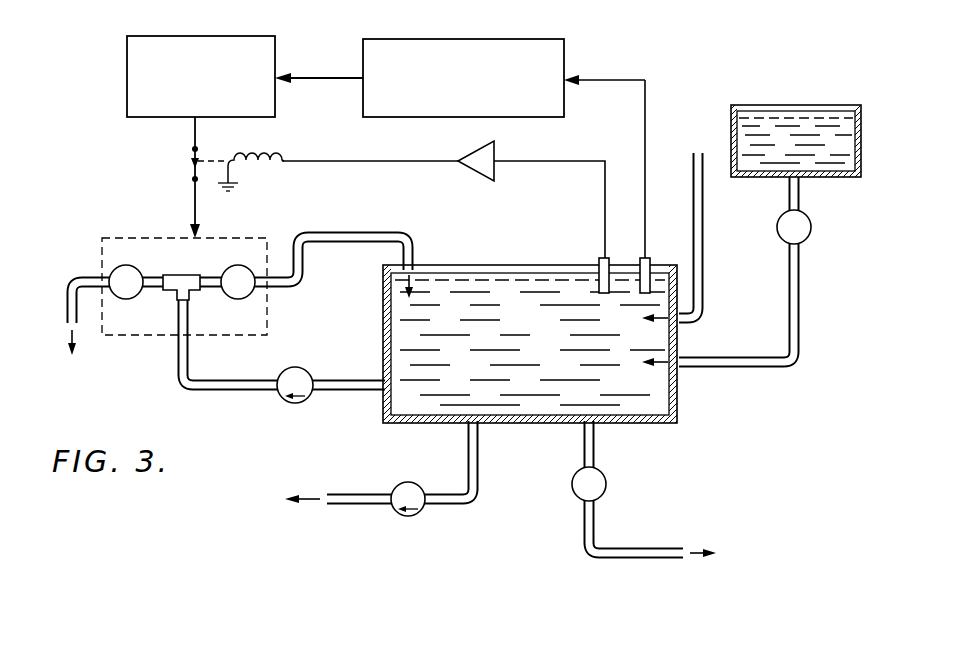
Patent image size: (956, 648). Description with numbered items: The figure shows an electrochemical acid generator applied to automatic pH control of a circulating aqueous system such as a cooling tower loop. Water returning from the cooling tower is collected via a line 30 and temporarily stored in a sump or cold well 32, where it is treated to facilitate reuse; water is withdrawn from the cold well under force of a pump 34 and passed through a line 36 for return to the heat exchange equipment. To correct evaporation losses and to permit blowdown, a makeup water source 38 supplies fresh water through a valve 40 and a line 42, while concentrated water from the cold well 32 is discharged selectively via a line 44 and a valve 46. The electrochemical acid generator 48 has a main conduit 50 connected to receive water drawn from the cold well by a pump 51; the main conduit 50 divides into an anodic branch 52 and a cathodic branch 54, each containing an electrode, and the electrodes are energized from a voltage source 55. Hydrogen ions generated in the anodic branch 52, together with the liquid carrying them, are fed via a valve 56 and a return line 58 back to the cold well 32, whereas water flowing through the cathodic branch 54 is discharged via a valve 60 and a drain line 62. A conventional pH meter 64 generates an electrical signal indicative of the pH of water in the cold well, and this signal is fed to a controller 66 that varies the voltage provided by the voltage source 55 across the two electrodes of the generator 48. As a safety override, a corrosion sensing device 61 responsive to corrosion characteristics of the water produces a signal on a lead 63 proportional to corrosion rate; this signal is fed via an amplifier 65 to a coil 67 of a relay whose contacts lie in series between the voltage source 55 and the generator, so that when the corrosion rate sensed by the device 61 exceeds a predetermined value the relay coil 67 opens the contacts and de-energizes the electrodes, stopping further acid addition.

The line 30 is at (704, 211).
The sump or cold well 32 is at (508, 424).
The pump 34 is at (418, 516).
The line 36 is at (340, 506).
The makeup water source 38 is at (731, 120).
The valve 40 is at (812, 227).
The line 42 is at (800, 295).
The line 44 is at (595, 443).
The valve 46 is at (607, 484).
The electrochemical acid generator 48 is at (101, 230).
The main conduit 50 is at (189, 319).
The pump 51 is at (303, 368).
The anodic branch 52 is at (211, 274).
The cathodic branch 54 is at (155, 288).
The voltage source 55 is at (165, 36).
The valve 56 is at (243, 265).
The return line 58 is at (355, 234).
The valve 60 is at (138, 268).
The corrosion sensing device 61 is at (600, 263).
The drain line 62 is at (75, 276).
The lead 63 is at (561, 161).
The pH meter 64 is at (648, 258).
The amplifier 65 is at (494, 142).
The controller 66 is at (465, 39).
The coil 67 is at (266, 156).